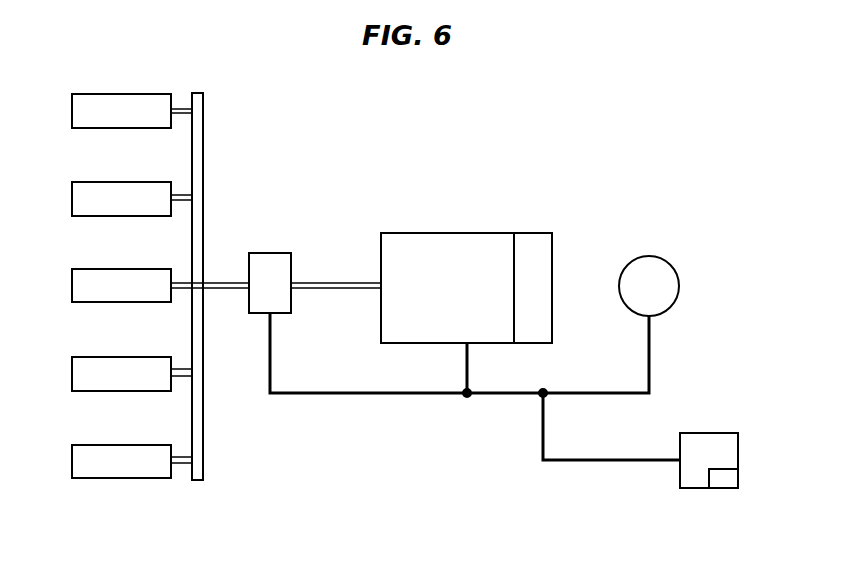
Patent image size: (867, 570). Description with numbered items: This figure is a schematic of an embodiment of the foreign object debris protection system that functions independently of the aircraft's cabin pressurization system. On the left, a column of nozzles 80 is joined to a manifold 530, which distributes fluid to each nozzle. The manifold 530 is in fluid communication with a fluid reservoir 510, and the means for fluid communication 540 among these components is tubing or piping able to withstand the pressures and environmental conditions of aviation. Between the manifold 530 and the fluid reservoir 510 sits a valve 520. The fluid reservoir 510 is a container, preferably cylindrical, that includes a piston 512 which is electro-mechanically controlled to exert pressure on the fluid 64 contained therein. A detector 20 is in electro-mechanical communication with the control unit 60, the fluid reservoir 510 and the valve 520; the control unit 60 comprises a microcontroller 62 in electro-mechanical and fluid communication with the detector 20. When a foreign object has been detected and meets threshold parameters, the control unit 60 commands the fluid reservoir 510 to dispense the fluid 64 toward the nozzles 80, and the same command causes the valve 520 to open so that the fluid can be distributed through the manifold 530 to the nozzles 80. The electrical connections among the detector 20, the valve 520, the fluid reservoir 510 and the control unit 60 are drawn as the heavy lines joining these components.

The nozzle 80 is at (78, 113).
The manifold 530 is at (204, 122).
The means for fluid communication 540 is at (181, 108).
The valve 520 is at (268, 252).
The fluid reservoir 510 is at (449, 232).
The fluid 64 is at (423, 281).
The piston 512 is at (532, 242).
The detector 20 is at (660, 274).
The control unit 60 is at (708, 454).
The microcontroller 62 is at (725, 480).